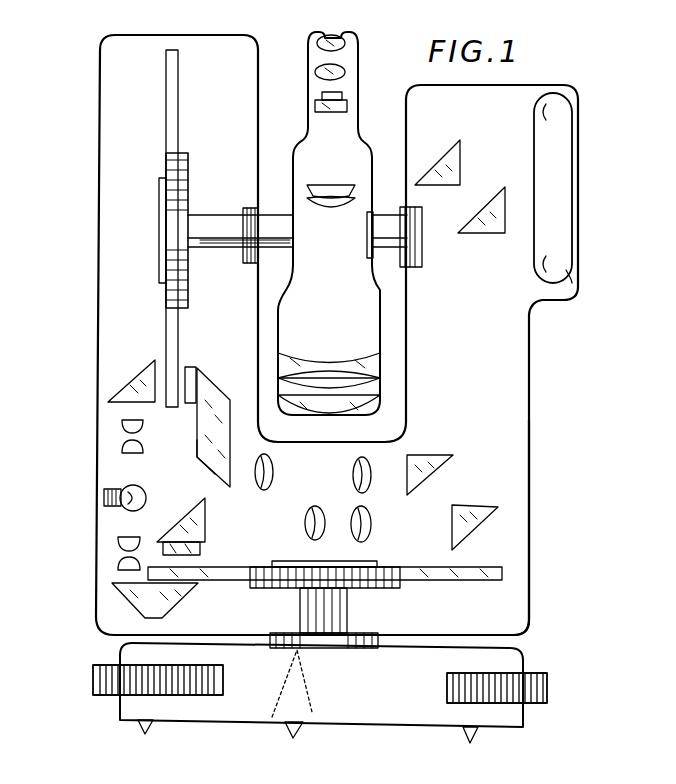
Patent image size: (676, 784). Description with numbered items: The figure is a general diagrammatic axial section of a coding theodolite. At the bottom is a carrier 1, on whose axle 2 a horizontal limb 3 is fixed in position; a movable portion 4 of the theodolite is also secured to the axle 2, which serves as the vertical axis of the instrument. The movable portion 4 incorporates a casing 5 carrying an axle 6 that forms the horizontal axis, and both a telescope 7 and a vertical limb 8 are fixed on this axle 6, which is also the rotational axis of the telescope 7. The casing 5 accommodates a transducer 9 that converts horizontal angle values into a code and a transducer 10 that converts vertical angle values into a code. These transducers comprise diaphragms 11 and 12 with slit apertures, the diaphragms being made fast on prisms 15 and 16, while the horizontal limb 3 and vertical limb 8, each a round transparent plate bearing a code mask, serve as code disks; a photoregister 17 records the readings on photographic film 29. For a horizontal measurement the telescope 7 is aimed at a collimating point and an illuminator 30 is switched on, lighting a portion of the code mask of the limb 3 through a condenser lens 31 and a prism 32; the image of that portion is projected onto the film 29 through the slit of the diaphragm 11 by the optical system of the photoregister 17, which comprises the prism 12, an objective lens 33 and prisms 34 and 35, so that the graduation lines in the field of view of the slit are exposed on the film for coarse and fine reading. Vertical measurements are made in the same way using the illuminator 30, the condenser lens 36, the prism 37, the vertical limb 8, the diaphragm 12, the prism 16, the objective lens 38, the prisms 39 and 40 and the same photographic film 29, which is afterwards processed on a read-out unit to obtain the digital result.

The carrier 1 is at (512, 660).
The axle 2 is at (355, 613).
The horizontal limb 3 is at (148, 573).
The movable portion 4 is at (529, 583).
The casing 5 is at (105, 142).
The axle 6 is at (207, 217).
The telescope 7 is at (352, 88).
The vertical limb 8 is at (167, 318).
The transducer 9 is at (198, 553).
The transducer 10 is at (191, 367).
The diaphragm 11 is at (198, 553).
The diaphragm 12 is at (205, 376).
The prism 15 is at (205, 521).
The prism 16 is at (203, 433).
The photoregister 17 is at (573, 262).
The photographic film 29 is at (572, 165).
The illuminator 30 is at (104, 507).
The condenser lens 31 is at (118, 543).
The prism 32 is at (135, 598).
The objective lens 33 is at (372, 528).
The prism 34 is at (470, 506).
The prism 35 is at (492, 201).
The condenser lens 36 is at (120, 445).
The prism 37 is at (136, 372).
The objective lens 38 is at (353, 475).
The prism 39 is at (431, 455).
The prism 40 is at (444, 153).